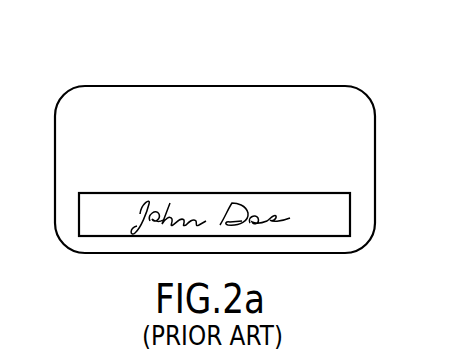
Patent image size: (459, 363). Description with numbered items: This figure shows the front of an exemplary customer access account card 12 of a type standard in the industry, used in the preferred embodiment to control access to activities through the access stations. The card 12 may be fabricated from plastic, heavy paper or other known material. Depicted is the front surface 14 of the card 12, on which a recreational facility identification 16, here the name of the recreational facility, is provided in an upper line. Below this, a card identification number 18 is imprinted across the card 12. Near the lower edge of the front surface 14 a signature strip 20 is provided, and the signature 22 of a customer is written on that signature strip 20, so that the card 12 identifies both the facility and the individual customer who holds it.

The account card 12 is at (228, 57).
The front surface 14 is at (328, 97).
The recreational facility identification 16 is at (96, 121).
The card identification number 18 is at (330, 166).
The signature strip 20 is at (327, 230).
The signature 22 is at (155, 240).